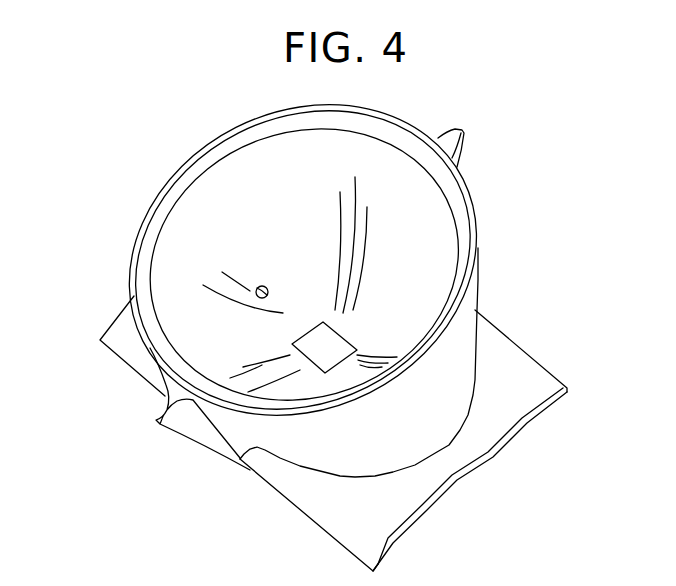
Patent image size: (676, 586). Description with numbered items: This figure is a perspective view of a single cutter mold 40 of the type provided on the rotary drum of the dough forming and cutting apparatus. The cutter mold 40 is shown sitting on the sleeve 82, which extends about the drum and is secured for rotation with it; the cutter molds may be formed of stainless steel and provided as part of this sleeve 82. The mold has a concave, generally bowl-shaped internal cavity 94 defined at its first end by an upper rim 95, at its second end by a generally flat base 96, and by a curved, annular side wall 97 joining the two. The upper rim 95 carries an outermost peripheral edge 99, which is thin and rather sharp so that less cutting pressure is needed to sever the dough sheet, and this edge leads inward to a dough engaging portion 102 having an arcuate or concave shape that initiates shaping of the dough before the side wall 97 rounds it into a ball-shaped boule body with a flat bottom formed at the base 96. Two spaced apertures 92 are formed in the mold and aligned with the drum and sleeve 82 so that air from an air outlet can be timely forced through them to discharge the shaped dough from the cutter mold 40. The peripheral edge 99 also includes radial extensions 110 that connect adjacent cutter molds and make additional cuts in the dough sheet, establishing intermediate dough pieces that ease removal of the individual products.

The cutter mold 40 is at (319, 278).
The sleeve 82 is at (522, 392).
The apertures 92 is at (256, 288).
The internal cavity 94 is at (349, 160).
The upper rim 95 is at (480, 197).
The base 96 is at (400, 415).
The side wall 97 is at (489, 291).
The peripheral edge 99 is at (147, 348).
The dough engaging portion 102 is at (143, 293).
The radial extensions 110 is at (462, 130).